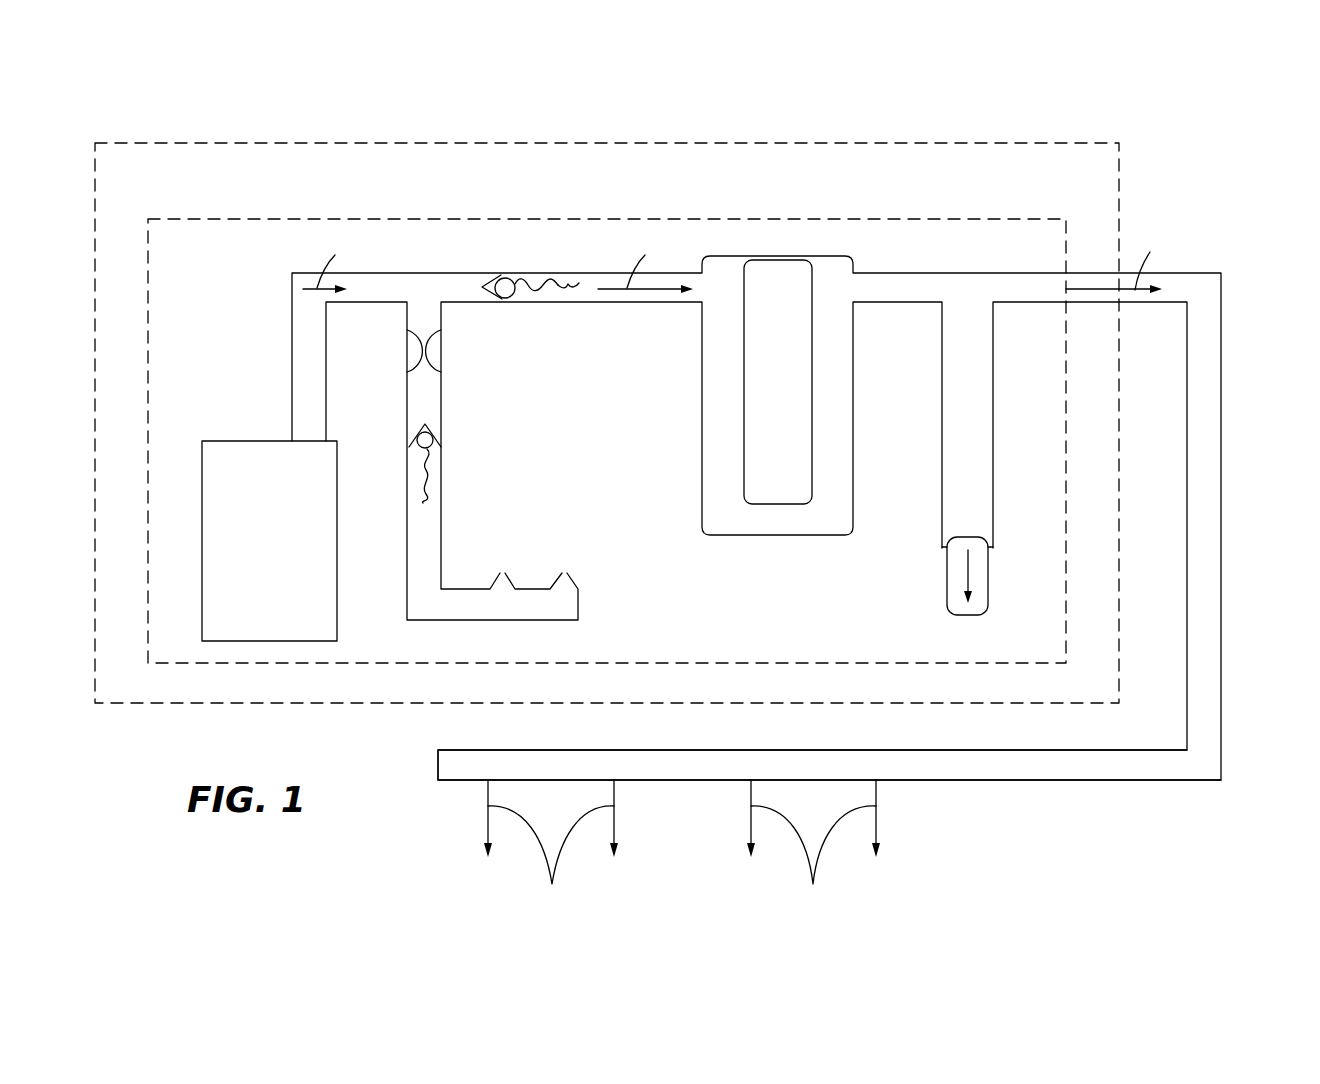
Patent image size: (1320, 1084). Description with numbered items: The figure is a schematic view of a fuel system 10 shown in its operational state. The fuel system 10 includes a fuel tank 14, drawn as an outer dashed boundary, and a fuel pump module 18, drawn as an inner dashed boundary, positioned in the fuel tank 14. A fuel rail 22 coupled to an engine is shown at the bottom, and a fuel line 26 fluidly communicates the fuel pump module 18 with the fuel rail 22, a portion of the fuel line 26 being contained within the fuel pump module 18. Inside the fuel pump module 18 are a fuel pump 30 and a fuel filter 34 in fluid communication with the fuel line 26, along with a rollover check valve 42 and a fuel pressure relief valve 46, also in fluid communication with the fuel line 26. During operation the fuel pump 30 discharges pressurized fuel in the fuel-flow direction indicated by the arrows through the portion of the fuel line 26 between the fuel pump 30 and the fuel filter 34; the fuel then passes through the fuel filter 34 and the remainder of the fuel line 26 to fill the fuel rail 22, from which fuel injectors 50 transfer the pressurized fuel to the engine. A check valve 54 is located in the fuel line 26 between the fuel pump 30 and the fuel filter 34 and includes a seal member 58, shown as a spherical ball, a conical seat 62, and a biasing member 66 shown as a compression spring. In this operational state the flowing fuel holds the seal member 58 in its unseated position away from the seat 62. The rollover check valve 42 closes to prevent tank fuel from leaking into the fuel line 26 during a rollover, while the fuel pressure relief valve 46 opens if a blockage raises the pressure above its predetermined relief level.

The fuel system 10 is at (1283, 122).
The fuel tank 14 is at (1119, 168).
The fuel pump module 18 is at (938, 215).
The fuel rail 22 is at (1015, 782).
The fuel line 26 is at (292, 378).
The fuel pump 30 is at (337, 570).
The fuel filter 34 is at (760, 535).
The rollover check valve 42 is at (441, 468).
The fuel pressure relief valve 46 is at (947, 580).
The fuel injectors 50 is at (682, 850).
The check valve 54 is at (524, 304).
The seal member 58 is at (512, 282).
The conical seat 62 is at (500, 300).
The biasing member 66 is at (565, 292).